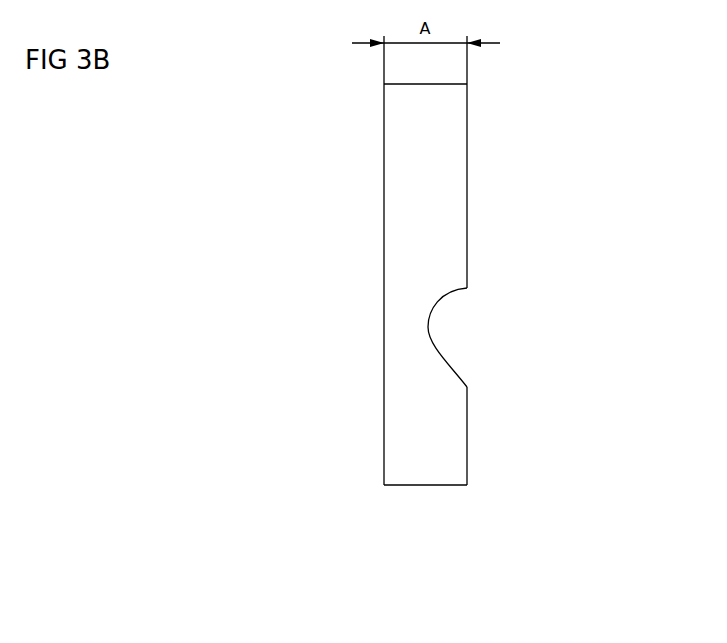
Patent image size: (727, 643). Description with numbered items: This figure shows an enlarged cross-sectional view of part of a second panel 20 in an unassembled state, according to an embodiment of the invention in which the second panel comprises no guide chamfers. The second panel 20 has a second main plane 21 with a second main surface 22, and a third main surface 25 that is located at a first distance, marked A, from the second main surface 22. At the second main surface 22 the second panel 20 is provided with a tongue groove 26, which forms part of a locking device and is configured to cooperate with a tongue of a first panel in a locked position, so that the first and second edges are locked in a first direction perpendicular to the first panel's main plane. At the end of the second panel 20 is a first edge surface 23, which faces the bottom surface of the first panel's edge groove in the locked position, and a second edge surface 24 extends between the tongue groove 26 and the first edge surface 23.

The second panel 20 is at (423, 324).
The second main plane 21 is at (467, 132).
The second main surface 22 is at (467, 207).
The first edge surface 23 is at (430, 485).
The second edge surface 24 is at (467, 455).
The third main surface 25 is at (384, 372).
The tongue groove 26 is at (446, 322).